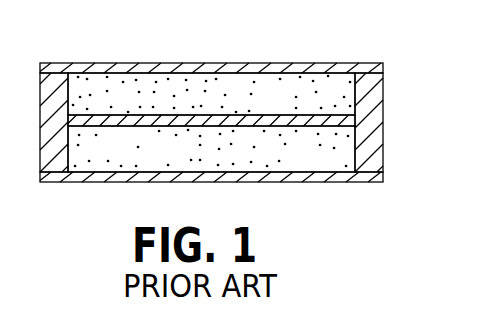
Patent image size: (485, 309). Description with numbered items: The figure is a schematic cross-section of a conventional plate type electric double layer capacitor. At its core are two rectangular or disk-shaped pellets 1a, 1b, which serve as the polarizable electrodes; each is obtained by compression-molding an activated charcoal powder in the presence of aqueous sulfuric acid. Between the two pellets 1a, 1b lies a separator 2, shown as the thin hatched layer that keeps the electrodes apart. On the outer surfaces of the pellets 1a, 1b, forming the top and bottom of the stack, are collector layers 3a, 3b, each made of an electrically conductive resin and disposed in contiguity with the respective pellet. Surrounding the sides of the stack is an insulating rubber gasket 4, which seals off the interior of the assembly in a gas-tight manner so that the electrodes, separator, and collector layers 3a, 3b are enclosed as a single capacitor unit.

The pellet (polarizable electrode) 1a is at (217, 78).
The pellet (polarizable electrode) 1b is at (268, 150).
The separator 2 is at (140, 118).
The collector layer 3a is at (298, 69).
The collector layer 3b is at (340, 175).
The insulating rubber gasket 4 is at (373, 135).